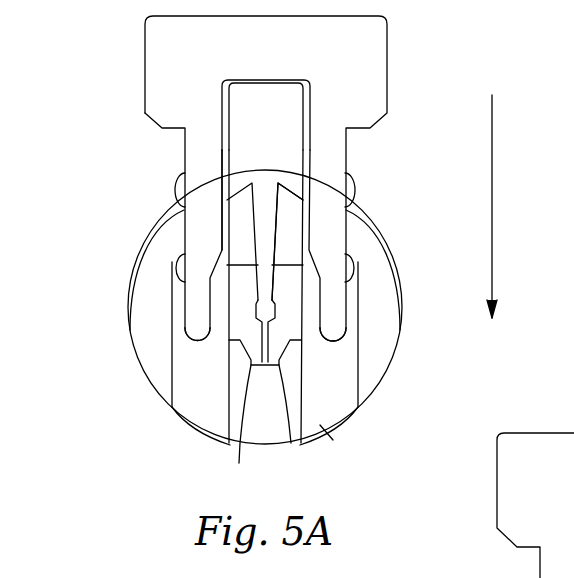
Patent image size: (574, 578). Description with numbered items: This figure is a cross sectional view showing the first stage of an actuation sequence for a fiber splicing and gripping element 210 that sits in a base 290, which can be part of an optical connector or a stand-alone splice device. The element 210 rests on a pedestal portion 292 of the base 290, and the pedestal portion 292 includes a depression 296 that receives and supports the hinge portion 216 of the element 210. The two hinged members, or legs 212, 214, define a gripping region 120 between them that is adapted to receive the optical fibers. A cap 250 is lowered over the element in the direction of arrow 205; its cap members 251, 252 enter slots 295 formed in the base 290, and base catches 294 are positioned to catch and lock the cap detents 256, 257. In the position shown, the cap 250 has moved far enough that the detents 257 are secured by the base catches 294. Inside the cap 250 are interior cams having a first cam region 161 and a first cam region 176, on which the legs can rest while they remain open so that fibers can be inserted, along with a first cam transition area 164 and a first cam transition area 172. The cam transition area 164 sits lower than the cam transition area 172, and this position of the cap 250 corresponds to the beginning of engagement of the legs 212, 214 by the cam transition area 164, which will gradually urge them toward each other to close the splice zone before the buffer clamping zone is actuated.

The cap 250 is at (367, 53).
The first cam transition area 172 is at (222, 150).
The first cam transition area 164 is at (223, 177).
The hinge portion 216 is at (260, 320).
The first cam region 161 is at (300, 222).
The first cam region 176 is at (287, 241).
The member (leg) 214 is at (278, 312).
The element 210 is at (296, 330).
The pedestal portion 292 is at (280, 437).
The base 290 is at (145, 350).
The gripping region 120 is at (255, 310).
The cap detent 256 is at (177, 183).
The cap detent 257 is at (175, 270).
The base catch 294 is at (172, 230).
The slot 295 is at (203, 417).
The depression 296 is at (325, 430).
The member (leg) 212 is at (237, 220).
The cap member 251 is at (197, 316).
The cap member 252 is at (330, 313).
The arrow 205 is at (494, 196).